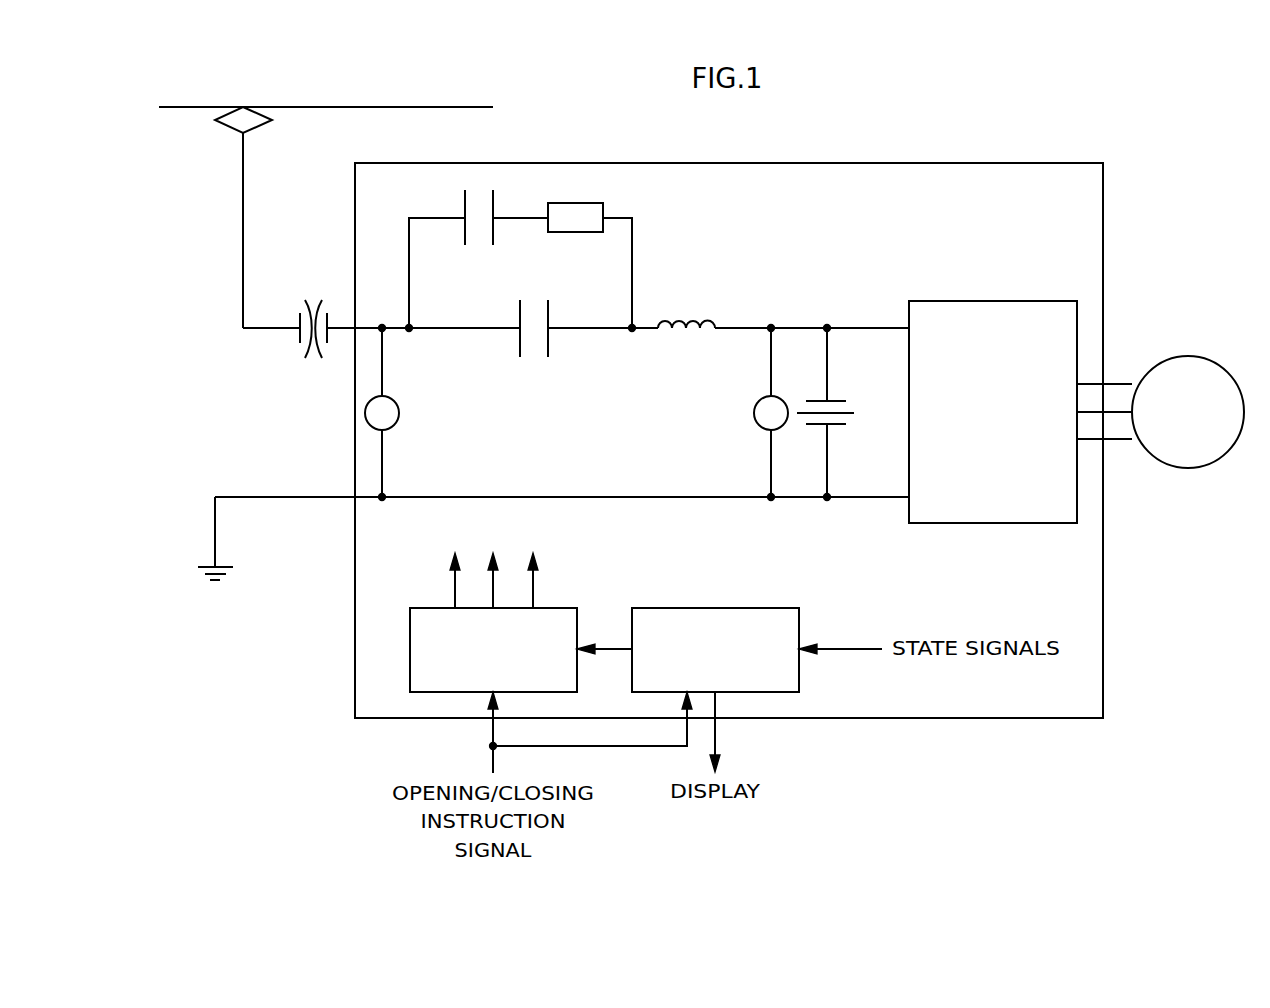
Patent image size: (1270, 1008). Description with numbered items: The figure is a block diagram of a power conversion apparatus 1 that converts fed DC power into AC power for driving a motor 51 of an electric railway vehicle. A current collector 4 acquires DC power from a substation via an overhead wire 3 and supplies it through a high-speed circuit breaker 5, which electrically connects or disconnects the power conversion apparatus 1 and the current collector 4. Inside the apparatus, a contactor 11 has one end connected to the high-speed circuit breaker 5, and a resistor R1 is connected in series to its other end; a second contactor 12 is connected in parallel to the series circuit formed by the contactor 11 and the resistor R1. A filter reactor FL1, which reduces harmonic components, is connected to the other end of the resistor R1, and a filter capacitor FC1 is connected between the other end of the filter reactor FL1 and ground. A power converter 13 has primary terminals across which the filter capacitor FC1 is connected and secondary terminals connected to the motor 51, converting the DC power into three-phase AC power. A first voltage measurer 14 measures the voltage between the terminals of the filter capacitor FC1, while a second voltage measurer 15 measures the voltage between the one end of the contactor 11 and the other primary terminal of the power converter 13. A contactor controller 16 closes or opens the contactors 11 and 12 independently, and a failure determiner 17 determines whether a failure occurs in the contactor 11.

The power conversion apparatus 1 is at (805, 163).
The overhead wire 3 is at (478, 107).
The current collector 4 is at (228, 124).
The high-speed circuit breaker 5 is at (298, 340).
The contactor 11 is at (465, 235).
The contactor 12 is at (520, 340).
The resistor R1 is at (596, 232).
The filter reactor FL1 is at (715, 328).
The filter capacitor FC1 is at (830, 400).
The power converter 13 is at (962, 523).
The first voltage measurer 14 is at (757, 422).
The second voltage measurer 15 is at (399, 413).
The contactor controller 16 is at (410, 640).
The failure determiner 17 is at (740, 608).
The motor 51 is at (1188, 356).